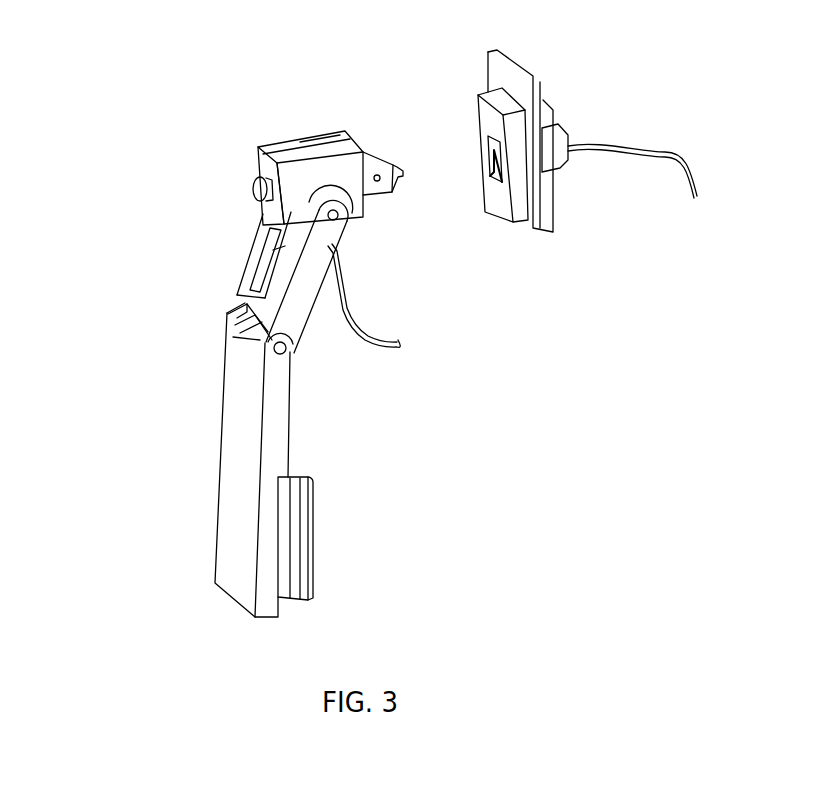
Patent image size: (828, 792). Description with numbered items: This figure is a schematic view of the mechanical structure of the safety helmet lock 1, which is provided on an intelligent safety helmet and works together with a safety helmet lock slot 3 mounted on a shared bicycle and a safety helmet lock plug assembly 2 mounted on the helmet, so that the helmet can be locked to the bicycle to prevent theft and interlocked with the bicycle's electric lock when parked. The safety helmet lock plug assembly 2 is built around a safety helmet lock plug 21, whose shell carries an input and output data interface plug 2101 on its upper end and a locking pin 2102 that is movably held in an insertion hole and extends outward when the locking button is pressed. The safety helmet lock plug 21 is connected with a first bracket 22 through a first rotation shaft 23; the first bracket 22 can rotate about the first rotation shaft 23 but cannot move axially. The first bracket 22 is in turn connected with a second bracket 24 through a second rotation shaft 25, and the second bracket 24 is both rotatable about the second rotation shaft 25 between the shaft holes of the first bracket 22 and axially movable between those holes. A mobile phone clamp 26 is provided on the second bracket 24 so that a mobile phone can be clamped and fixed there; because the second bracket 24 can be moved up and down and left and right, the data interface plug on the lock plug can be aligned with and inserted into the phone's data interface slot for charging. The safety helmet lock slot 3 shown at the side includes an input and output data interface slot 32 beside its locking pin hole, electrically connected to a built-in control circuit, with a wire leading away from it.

The safety helmet lock 1 is at (356, 330).
The safety helmet lock plug assembly 2 is at (259, 345).
The safety helmet lock slot 3 is at (589, 157).
The safety helmet lock plug 21 is at (327, 177).
The input and output data interface plug 2101 is at (372, 157).
The locking pin 2102 is at (377, 180).
The first bracket 22 is at (242, 282).
The first rotation shaft 23 is at (340, 216).
The second bracket 24 is at (245, 467).
The second rotation shaft 25 is at (285, 352).
The mobile phone clamp 26 is at (300, 527).
The input and output data interface slot 32 is at (540, 167).